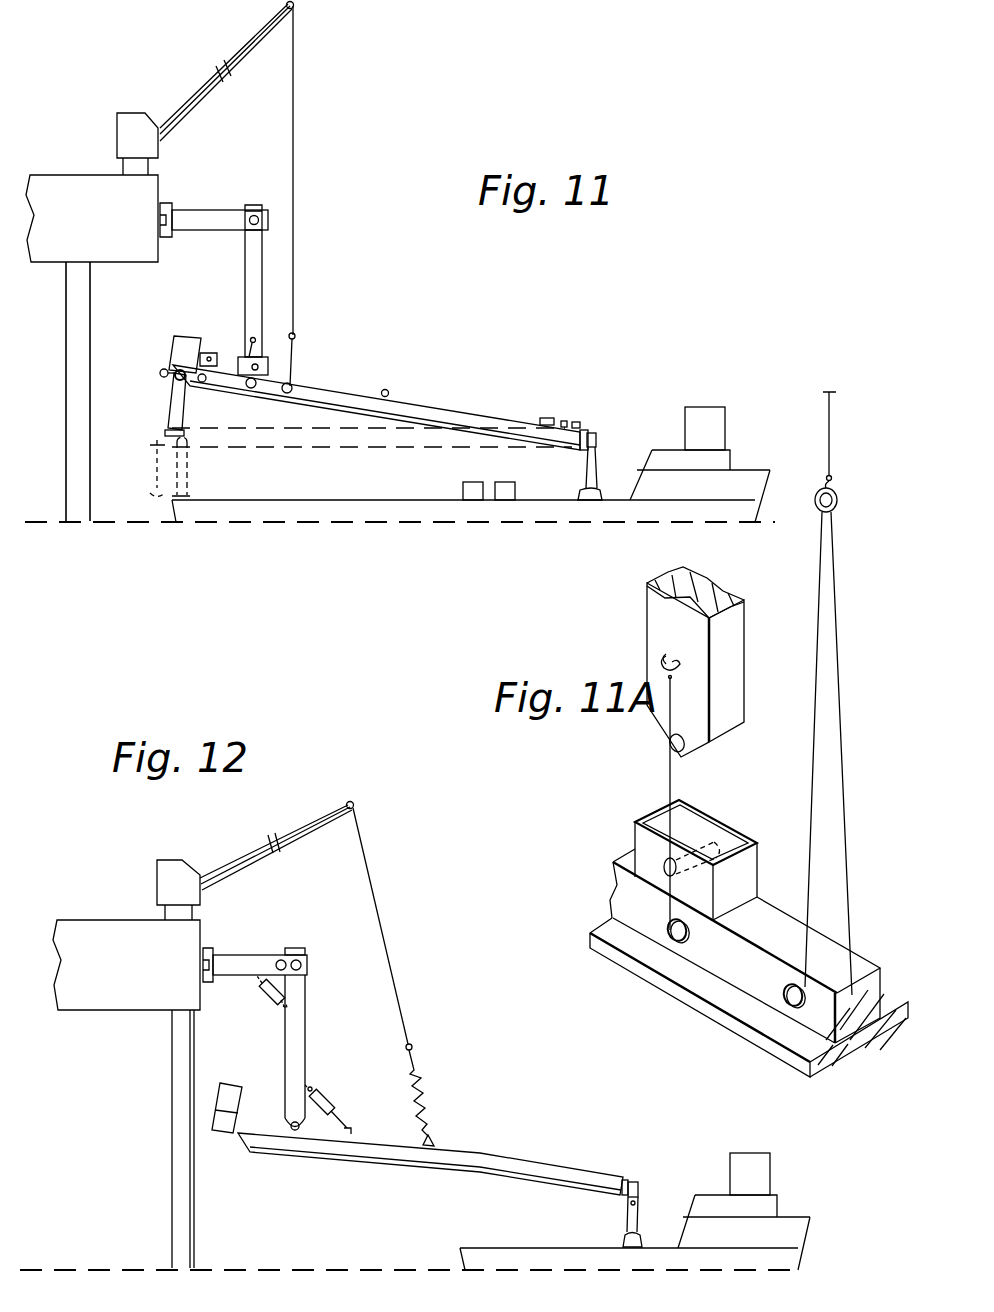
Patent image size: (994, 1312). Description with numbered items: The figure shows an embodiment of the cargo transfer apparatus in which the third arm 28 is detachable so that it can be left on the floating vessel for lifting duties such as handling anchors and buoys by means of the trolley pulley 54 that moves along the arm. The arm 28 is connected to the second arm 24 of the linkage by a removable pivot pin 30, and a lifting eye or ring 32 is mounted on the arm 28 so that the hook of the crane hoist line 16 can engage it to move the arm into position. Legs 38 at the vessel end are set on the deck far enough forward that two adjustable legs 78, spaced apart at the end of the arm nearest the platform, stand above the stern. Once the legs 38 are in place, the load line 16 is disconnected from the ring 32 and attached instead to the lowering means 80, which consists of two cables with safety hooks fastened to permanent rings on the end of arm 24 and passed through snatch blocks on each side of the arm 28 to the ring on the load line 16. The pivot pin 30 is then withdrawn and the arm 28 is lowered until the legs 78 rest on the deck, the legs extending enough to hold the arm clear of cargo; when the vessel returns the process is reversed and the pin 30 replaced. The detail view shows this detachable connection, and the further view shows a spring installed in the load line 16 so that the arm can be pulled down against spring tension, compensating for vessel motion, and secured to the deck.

In FIG. 11, the hoist line 16 is at (296, 138).
In FIG. 11A, the hoist line 16 is at (832, 430).
In FIG. 11, the second arm 24 is at (252, 267).
In FIG. 11A, the second arm 24 is at (738, 650).
In FIG. 11, the third arm 28 is at (458, 410).
In FIG. 11A, the third arm 28 is at (850, 962).
In FIG. 11A, the pivot pin 30 is at (747, 810).
In FIG. 11, the ring 32 is at (386, 390).
In FIG. 11, the legs 38 is at (597, 465).
In FIG. 11, the movable pulley 54 is at (284, 395).
In FIG. 11, the adjustable legs 78 is at (172, 402).
In FIG. 11, the lowering means 80 is at (296, 336).
In FIG. 11A, the lowering means 80 is at (838, 498).